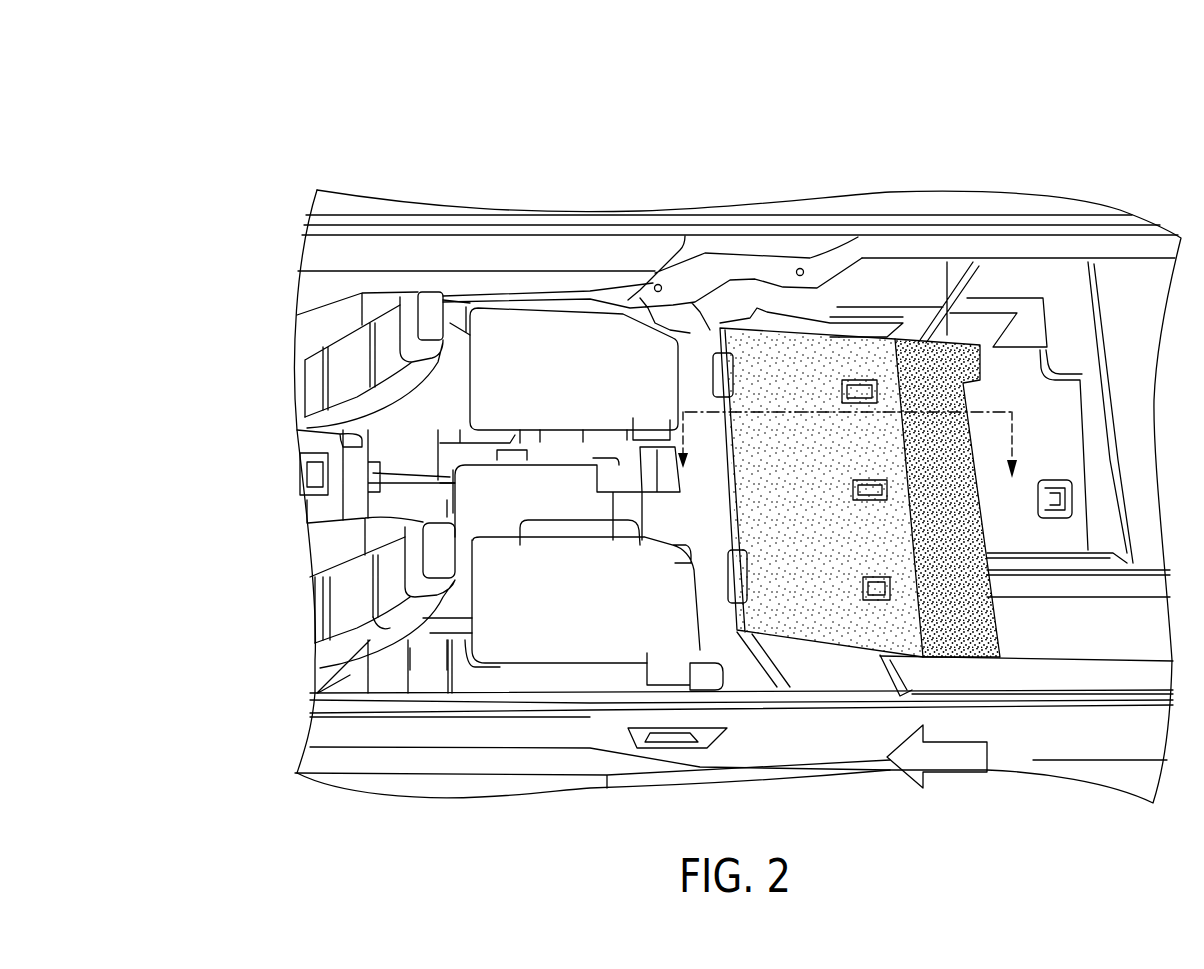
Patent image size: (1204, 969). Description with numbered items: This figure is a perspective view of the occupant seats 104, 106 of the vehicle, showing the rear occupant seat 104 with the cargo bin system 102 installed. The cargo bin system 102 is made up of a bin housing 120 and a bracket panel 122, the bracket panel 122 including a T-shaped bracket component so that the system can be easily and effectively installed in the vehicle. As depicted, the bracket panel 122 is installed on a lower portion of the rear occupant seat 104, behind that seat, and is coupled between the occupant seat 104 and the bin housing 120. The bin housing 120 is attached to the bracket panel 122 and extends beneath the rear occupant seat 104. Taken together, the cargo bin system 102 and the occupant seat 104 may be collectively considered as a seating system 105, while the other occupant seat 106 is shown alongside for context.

The cargo bin system 102 is at (206, 145).
The rear occupant seat 104 is at (757, 340).
The seating system 105 is at (915, 60).
The occupant seat 106 is at (527, 383).
The bin housing 120 is at (795, 410).
The bracket panel 122 is at (943, 367).